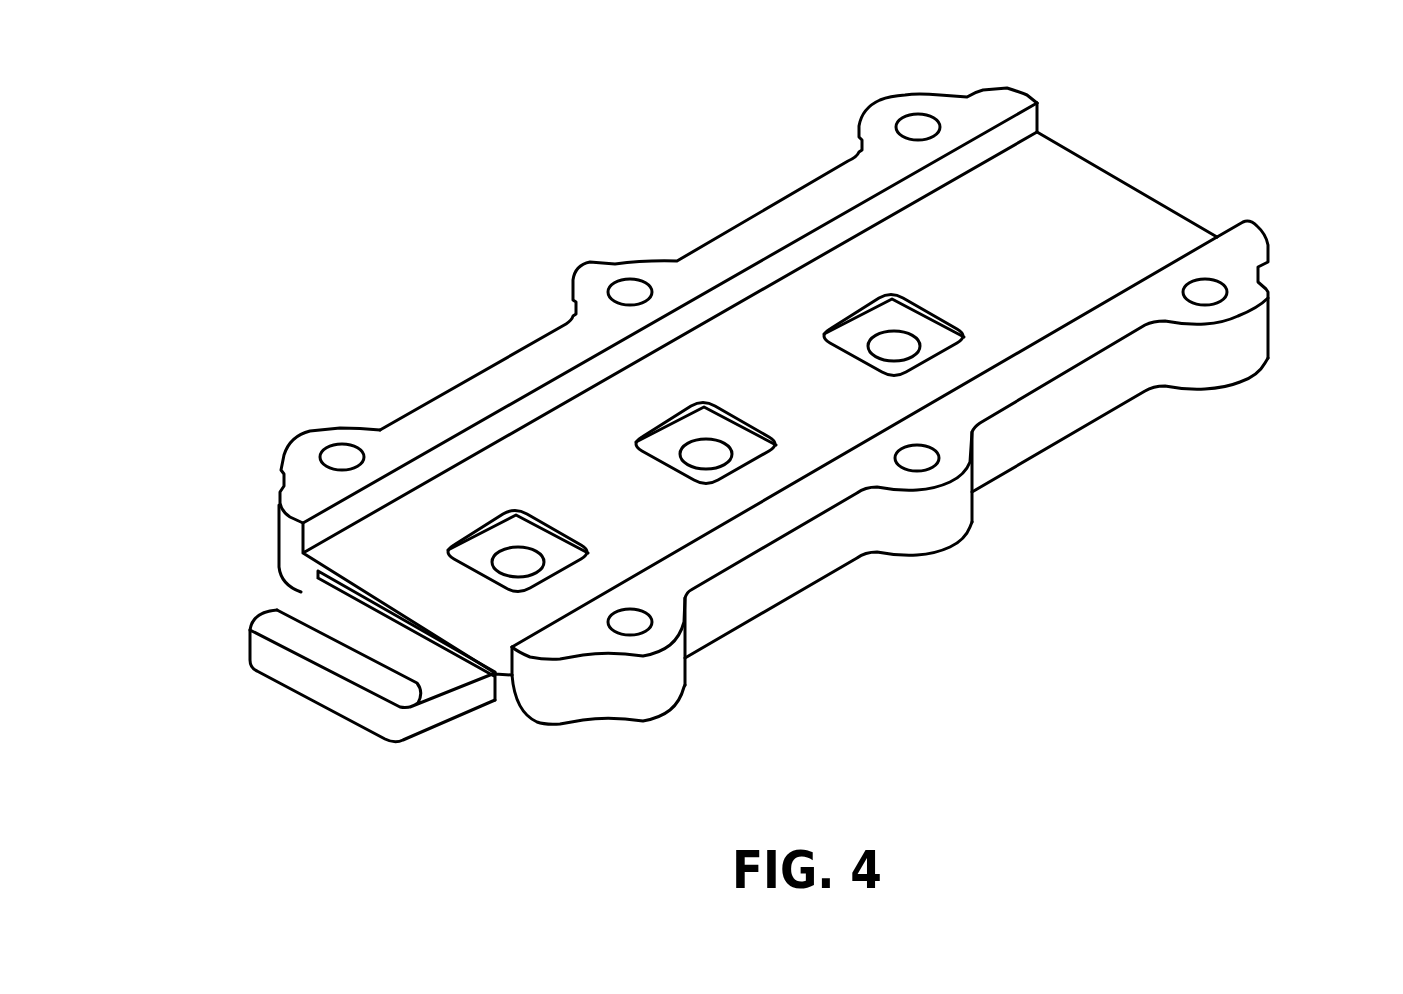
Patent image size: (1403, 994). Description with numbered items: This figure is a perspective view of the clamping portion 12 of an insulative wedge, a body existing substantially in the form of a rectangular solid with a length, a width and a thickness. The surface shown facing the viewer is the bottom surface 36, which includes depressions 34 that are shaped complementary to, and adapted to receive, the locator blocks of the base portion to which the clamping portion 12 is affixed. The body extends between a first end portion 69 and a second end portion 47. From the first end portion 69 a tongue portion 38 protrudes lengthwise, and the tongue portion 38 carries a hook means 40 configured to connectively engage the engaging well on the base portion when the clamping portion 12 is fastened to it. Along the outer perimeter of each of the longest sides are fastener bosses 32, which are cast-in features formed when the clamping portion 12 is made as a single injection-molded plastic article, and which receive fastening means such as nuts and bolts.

The clamping portion 12 is at (1237, 492).
The fastener bosses 32 is at (900, 106).
The depression 34 is at (527, 532).
The bottom surface 36 is at (1085, 243).
The tongue portion 38 is at (333, 618).
The hook means 40 is at (318, 648).
The second end portion 47 is at (1090, 160).
The first end portion 69 is at (508, 693).